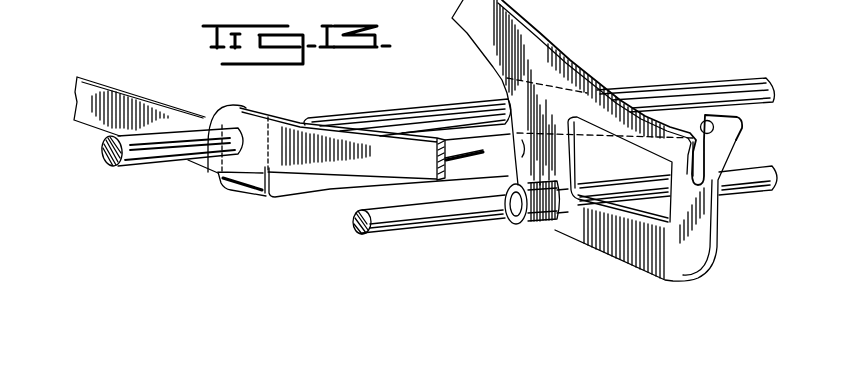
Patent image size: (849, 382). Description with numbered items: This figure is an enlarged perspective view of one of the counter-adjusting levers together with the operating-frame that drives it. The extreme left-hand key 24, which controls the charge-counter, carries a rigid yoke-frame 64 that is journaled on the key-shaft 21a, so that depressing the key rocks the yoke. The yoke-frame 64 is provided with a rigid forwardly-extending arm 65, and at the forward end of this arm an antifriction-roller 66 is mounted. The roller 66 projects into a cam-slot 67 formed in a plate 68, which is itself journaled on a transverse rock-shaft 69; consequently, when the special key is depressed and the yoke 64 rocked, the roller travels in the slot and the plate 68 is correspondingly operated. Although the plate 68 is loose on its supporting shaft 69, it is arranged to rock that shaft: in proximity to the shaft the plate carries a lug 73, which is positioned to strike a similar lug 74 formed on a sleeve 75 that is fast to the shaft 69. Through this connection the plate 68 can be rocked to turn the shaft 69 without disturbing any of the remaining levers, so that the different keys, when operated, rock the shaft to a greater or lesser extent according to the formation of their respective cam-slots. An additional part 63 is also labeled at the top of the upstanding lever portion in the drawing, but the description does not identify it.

The extreme left-hand key 24 is at (205, 116).
The key-shaft 21a is at (394, 101).
The arm 63 is at (597, 92).
The rigid yoke-frame 64 is at (341, 187).
The forwardly-extending arm 65 is at (648, 105).
The antifriction-roller 66 is at (714, 128).
The cam-slot 67 is at (704, 150).
The plate 68 is at (708, 202).
The transverse rock-shaft 69 is at (465, 196).
The lug 73 is at (547, 183).
The lug 74 is at (553, 203).
The sleeve 75 is at (522, 224).